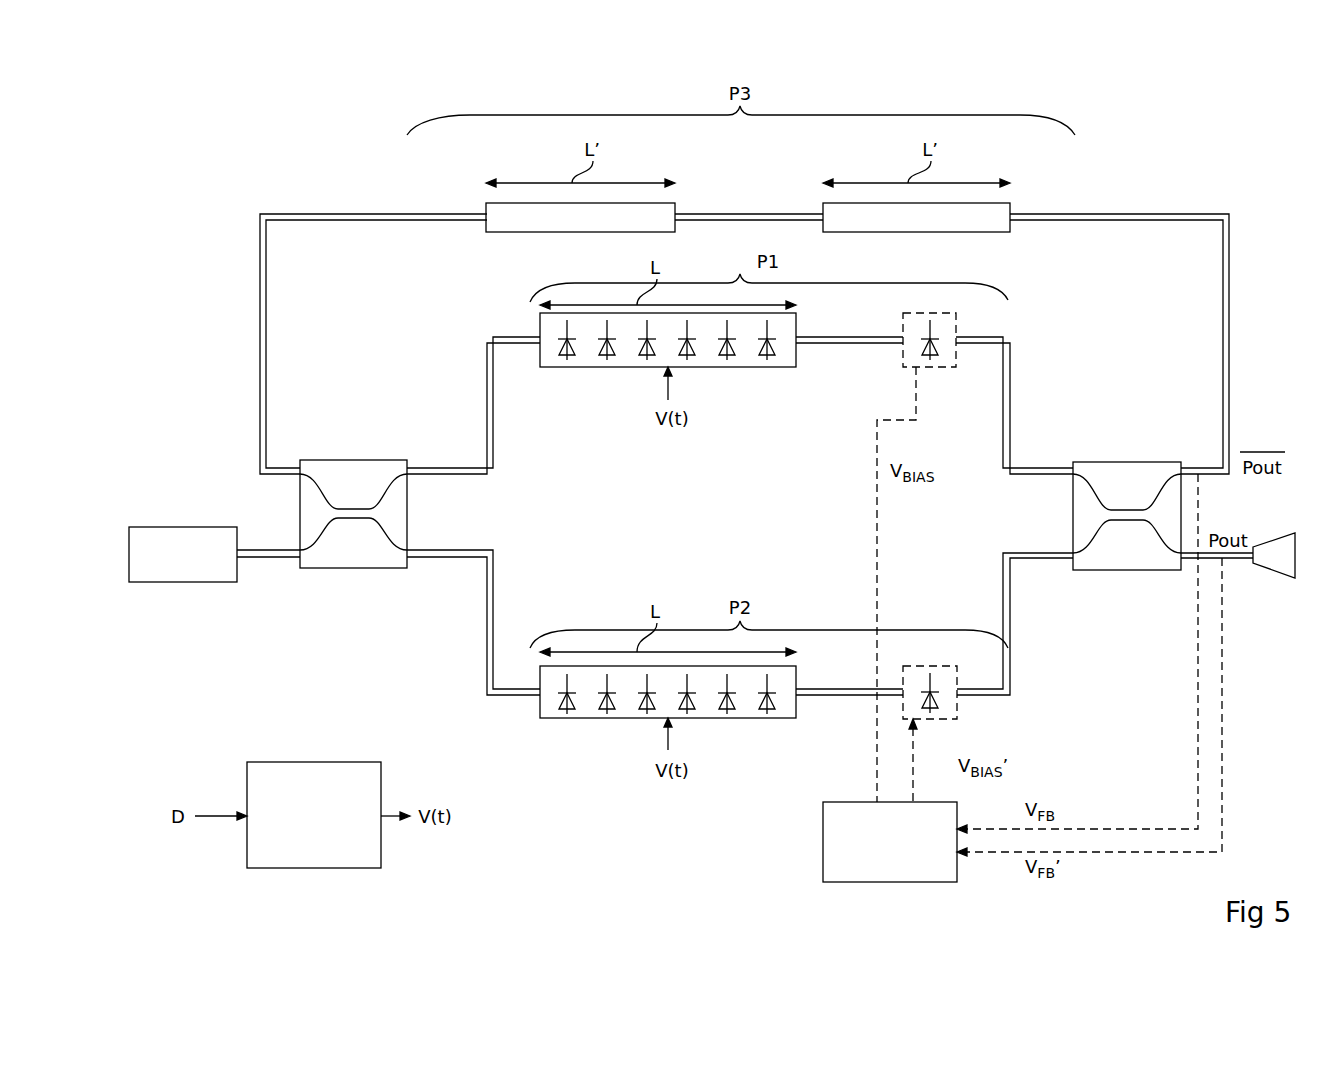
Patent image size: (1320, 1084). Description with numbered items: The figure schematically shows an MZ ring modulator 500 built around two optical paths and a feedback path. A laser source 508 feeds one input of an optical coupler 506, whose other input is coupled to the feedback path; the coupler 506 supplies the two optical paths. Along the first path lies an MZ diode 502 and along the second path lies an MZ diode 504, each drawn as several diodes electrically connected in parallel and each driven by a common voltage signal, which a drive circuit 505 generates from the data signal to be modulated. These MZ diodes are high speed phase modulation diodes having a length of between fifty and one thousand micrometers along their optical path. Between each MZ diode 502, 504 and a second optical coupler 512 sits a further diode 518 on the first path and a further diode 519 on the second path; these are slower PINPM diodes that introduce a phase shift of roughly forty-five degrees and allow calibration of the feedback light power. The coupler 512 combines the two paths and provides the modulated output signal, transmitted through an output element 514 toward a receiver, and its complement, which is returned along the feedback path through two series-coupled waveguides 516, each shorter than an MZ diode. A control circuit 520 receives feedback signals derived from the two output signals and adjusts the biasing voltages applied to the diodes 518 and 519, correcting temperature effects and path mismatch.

The MZ ring modulator 500 is at (1118, 164).
The MZ diode 502 is at (783, 362).
The MZ diode 504 is at (783, 714).
The drive circuit 505 is at (345, 768).
The optical coupler 506 is at (378, 466).
The laser source 508 is at (176, 532).
The optical coupler 512 is at (1120, 466).
The output element 514 is at (1277, 570).
The waveguide 516 is at (540, 226).
The diode 518 is at (937, 367).
The diode 519 is at (943, 716).
The control circuit 520 is at (887, 876).